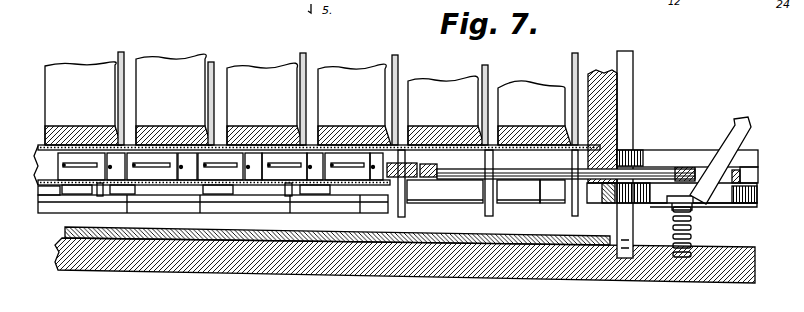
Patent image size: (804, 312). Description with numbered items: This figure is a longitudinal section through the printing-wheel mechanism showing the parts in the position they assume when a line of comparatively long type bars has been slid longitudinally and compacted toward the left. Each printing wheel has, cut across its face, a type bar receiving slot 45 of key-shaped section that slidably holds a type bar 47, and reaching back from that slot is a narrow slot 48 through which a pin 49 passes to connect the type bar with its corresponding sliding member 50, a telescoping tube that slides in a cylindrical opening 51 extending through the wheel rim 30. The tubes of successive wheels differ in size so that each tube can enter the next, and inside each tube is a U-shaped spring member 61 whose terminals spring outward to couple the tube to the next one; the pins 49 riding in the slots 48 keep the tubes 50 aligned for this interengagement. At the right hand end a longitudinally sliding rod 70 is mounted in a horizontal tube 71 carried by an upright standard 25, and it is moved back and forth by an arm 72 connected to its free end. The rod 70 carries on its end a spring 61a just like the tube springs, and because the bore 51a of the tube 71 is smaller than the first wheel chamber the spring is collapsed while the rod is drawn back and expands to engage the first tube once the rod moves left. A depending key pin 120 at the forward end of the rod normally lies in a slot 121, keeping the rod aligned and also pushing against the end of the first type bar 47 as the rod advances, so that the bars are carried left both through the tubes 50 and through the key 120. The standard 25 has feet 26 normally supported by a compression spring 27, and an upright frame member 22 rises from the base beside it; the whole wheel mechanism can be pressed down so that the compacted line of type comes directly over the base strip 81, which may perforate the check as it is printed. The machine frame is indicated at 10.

The machine frame 10 is at (50, 176).
The upright frame member 22 is at (634, 82).
The upright standard 25 is at (602, 116).
The feet 26 is at (720, 207).
The compression spring 27 is at (694, 232).
The wheel rim 30 is at (86, 120).
The type bar receiving slot 45 is at (440, 206).
The type bar 47 is at (260, 212).
The narrow slot 48 is at (556, 198).
The pin 49 is at (102, 187).
The sliding member 50 is at (226, 148).
The opening 51 is at (452, 148).
The bore 51a is at (627, 170).
The spring member 61 is at (95, 166).
The spring 61a is at (410, 165).
The longitudinally sliding rod 70 is at (635, 165).
The horizontal tube 71 is at (669, 166).
The arm 72 is at (750, 128).
The base strip 81 is at (491, 245).
The key pin 120 is at (399, 208).
The slot 121 is at (590, 202).